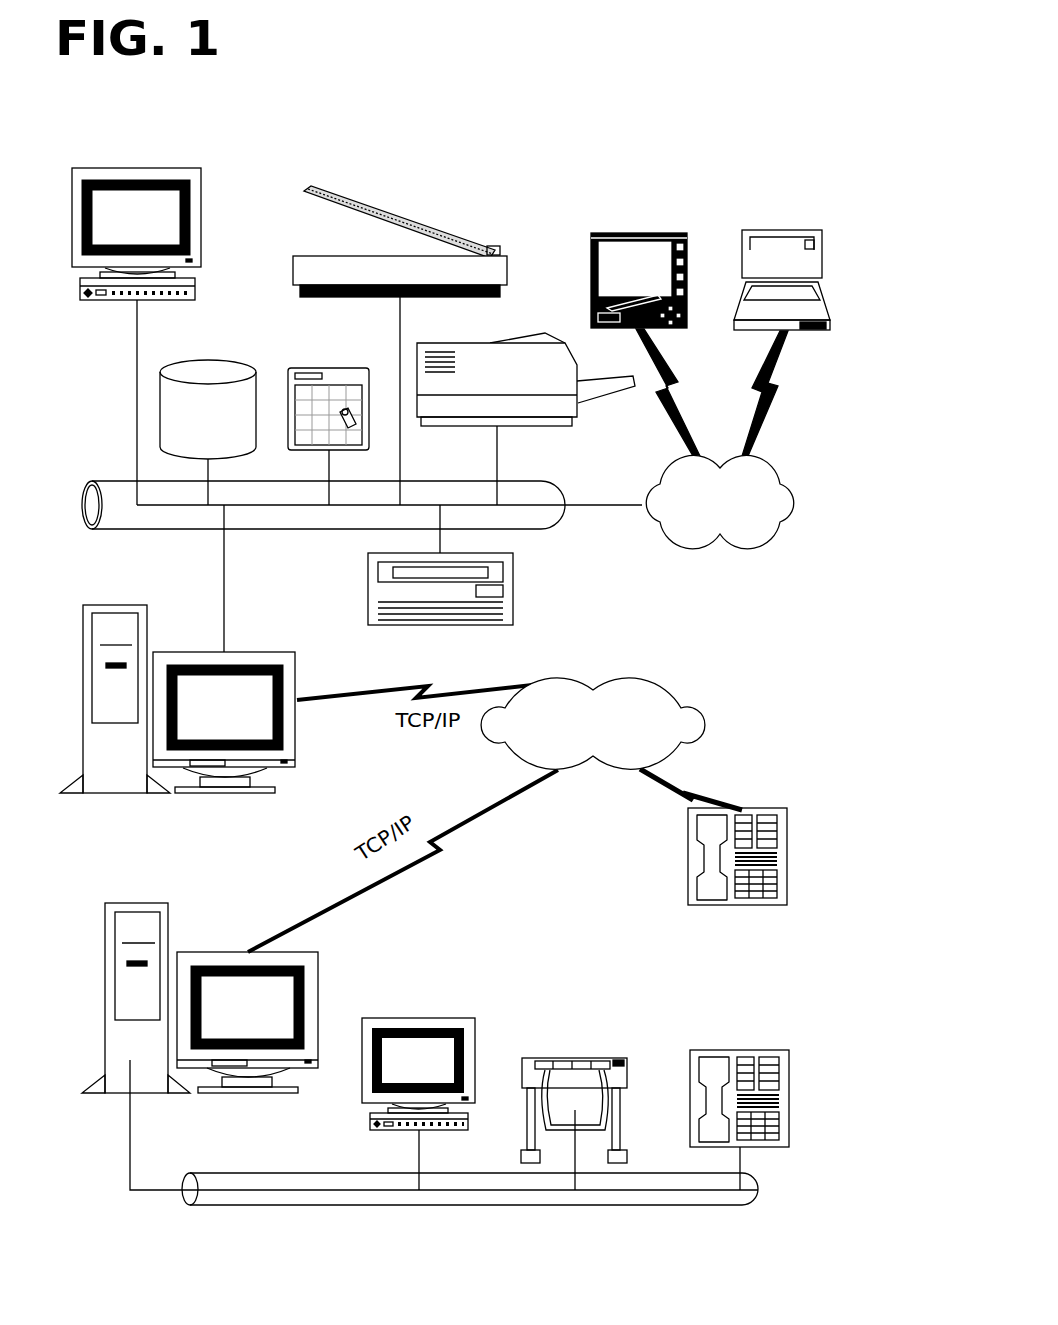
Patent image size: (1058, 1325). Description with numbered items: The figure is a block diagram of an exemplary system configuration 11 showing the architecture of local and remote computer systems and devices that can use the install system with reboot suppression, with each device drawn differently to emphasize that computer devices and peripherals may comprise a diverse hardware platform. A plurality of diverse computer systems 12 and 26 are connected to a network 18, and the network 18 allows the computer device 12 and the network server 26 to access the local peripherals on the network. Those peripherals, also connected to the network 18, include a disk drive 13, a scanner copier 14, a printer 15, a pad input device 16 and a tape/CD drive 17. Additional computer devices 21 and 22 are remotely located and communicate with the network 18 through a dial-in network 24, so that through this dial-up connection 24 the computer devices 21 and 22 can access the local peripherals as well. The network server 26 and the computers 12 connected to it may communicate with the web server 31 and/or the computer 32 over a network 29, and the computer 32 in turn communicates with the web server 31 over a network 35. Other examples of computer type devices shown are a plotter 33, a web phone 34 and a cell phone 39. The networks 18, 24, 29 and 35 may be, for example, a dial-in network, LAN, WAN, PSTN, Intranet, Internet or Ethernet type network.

The system configuration 11 is at (502, 90).
The computer system 12 is at (138, 168).
The disk drive 13 is at (207, 361).
The scanner copier 14 is at (397, 256).
The printer 15 is at (497, 343).
The pad input device 16 is at (330, 368).
The tape/CD drive 17 is at (513, 592).
The network 18 is at (128, 531).
The computer device 21 is at (637, 233).
The computer device 22 is at (782, 232).
The dial-in network 24 is at (745, 547).
The network server 26 is at (107, 605).
The network 29 is at (623, 680).
The web server 31 is at (130, 903).
The computer 32 is at (418, 1018).
The plotter 33 is at (523, 1070).
The web phone 34 is at (690, 1095).
The network 35 is at (292, 1177).
The cell phone 39 is at (688, 858).